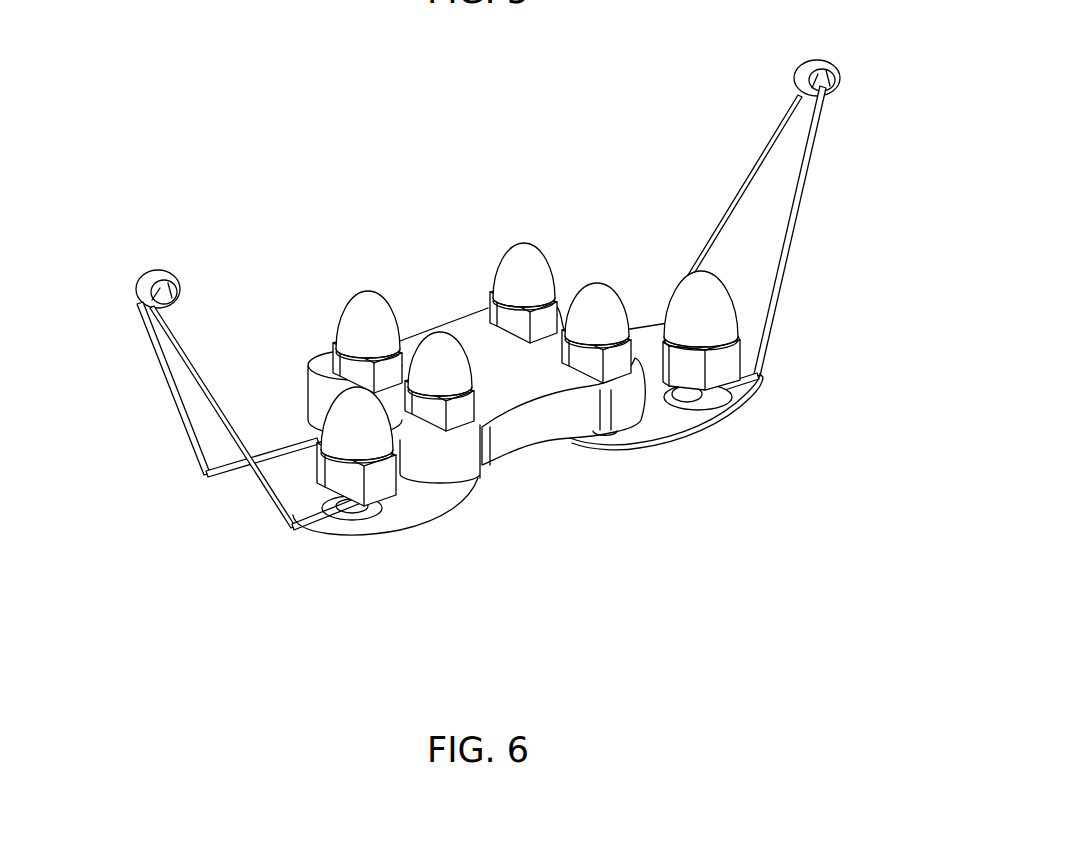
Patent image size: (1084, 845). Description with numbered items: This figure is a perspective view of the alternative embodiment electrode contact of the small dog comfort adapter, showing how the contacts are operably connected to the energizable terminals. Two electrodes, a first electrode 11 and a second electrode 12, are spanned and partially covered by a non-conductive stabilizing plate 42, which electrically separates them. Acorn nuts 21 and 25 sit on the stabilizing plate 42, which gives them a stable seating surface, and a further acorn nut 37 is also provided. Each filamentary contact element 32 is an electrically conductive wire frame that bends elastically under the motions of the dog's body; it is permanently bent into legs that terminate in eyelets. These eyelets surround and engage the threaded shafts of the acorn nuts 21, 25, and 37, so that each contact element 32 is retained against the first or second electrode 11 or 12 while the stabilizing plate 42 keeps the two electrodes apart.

The first electrode 11 is at (680, 444).
The second electrode 12 is at (407, 536).
The acorn nut 21 is at (543, 250).
The acorn nut 25 is at (383, 298).
The filamentary contact element 32 is at (128, 258).
The acorn nut 37 is at (733, 300).
The stabilizing plate 42 is at (520, 433).